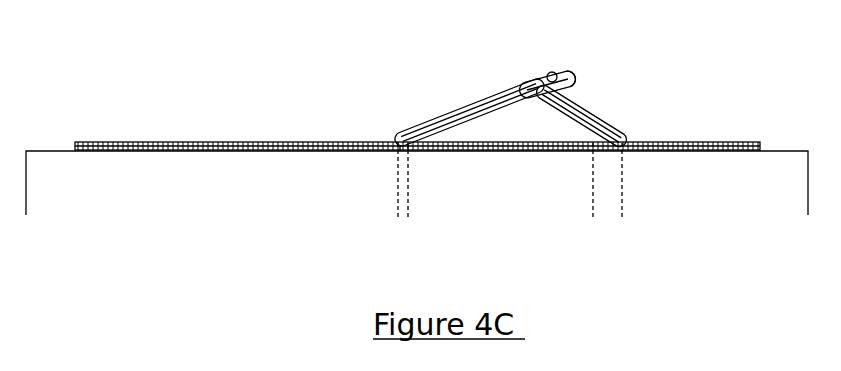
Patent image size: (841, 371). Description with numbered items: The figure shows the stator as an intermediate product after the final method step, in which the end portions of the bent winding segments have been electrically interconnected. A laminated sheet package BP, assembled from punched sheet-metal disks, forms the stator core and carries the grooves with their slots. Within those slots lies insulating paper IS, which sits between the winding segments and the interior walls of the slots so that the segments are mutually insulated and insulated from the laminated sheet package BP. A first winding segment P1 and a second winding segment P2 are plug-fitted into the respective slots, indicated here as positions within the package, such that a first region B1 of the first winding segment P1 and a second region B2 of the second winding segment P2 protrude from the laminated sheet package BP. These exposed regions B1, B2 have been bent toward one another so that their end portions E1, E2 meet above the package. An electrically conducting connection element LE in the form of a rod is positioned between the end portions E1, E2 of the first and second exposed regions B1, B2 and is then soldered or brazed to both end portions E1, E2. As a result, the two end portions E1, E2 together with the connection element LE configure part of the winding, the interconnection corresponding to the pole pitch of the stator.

The laminated sheet package BP is at (65, 192).
The insulating paper IS is at (181, 143).
The first winding segment P1 is at (402, 200).
The second winding segment P2 is at (609, 190).
The first region B1 is at (447, 118).
The second region B2 is at (597, 125).
The end portion E1 is at (566, 84).
The end portion E2 is at (517, 87).
The connection element LE is at (536, 74).